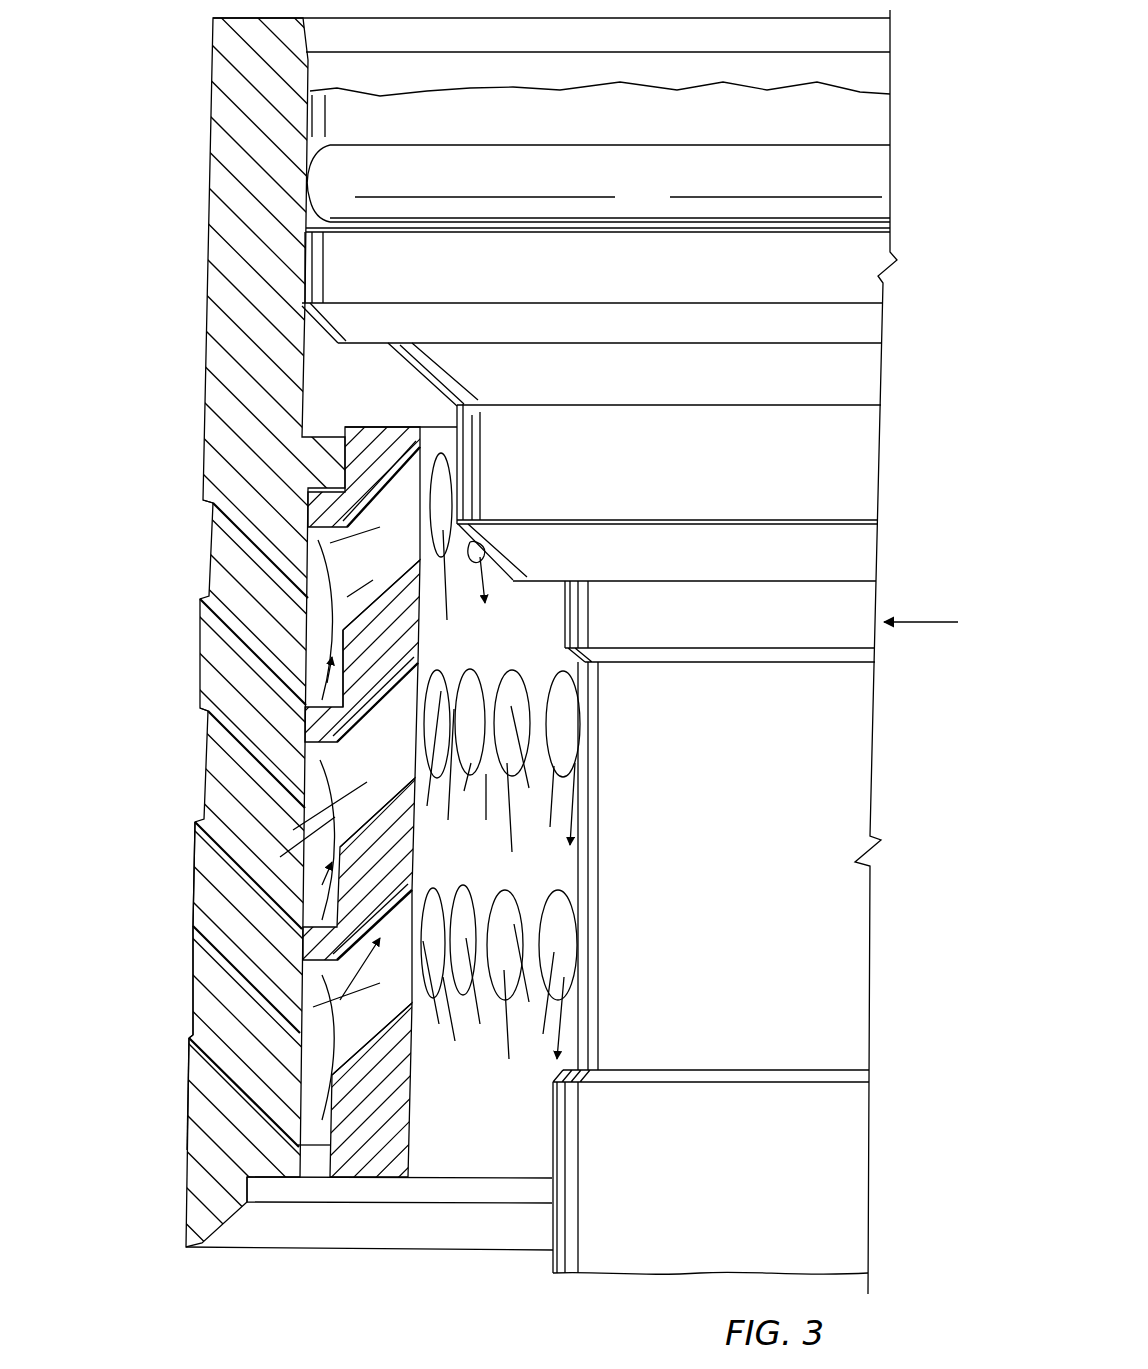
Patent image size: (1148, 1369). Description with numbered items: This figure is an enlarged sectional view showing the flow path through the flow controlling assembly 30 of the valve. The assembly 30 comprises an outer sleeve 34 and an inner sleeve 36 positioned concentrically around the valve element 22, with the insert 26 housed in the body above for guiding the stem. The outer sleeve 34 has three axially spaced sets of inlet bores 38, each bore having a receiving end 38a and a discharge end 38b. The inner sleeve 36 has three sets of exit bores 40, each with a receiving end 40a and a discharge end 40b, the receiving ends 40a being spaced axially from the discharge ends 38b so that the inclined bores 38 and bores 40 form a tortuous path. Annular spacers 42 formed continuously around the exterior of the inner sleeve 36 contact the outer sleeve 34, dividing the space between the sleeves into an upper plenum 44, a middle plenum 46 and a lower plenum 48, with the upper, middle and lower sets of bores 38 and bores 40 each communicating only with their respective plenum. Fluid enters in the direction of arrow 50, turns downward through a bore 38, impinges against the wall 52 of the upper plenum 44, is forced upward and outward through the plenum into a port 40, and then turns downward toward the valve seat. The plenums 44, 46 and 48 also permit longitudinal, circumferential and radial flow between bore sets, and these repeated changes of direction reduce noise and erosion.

The valve element 22 is at (675, 922).
The insert 26 is at (550, 292).
The assembly 30 is at (205, 284).
The outer sleeve 34 is at (222, 413).
The inner sleeve 36 is at (372, 455).
The bores 38 is at (240, 575).
The receiving end 38a is at (212, 962).
The discharge end 38b is at (285, 1105).
The bores 40 is at (311, 603).
The receiving end 40a is at (357, 1057).
The discharge end 40b is at (458, 884).
The annular spacers 42 is at (300, 512).
The upper plenum 44 is at (372, 508).
The middle plenum 46 is at (372, 748).
The lower plenum 48 is at (375, 950).
The arrow 50 is at (915, 623).
The wall 52 is at (345, 660).